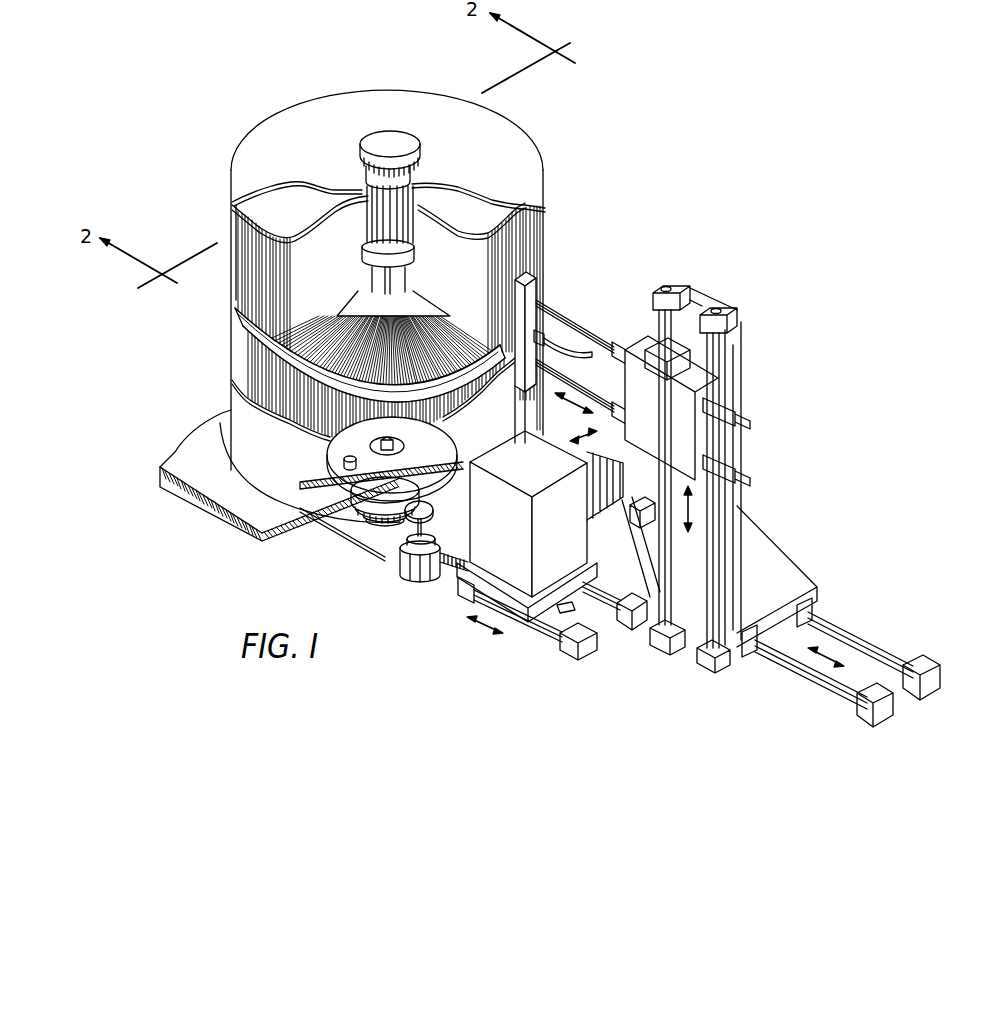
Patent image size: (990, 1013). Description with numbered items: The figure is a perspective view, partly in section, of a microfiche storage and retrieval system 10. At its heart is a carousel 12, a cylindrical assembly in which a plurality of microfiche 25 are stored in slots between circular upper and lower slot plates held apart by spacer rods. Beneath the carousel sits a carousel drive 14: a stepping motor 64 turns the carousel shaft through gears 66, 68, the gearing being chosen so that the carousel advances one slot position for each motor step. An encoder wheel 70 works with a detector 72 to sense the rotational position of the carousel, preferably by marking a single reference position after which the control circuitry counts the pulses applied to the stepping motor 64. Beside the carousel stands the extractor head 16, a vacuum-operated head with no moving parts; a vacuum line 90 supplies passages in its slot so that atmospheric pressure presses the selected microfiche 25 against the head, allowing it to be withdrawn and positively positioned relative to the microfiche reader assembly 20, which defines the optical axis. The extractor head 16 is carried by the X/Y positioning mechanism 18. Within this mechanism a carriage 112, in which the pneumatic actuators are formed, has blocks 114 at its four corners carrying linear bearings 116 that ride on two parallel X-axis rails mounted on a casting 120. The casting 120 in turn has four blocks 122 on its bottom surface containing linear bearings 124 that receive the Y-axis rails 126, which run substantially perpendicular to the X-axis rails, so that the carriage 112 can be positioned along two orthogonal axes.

The apparatus 10 is at (803, 160).
The carousel 12 is at (522, 165).
The carousel drive 14 is at (386, 594).
The extractor head 16 is at (548, 290).
The X/Y positioning mechanism 18 is at (782, 413).
The microfiche reader assembly 20 is at (515, 560).
The microfiche 25 is at (244, 303).
The stepping motor 64 is at (412, 571).
The gear 66 is at (397, 520).
The gear 68 is at (370, 495).
The encoder wheel 70 is at (360, 487).
The detector 72 is at (465, 502).
The vacuum line 90 is at (572, 348).
The carriage 112 is at (638, 376).
The blocks 114 is at (731, 384).
The linear bearings 116 is at (730, 371).
The casting 120 is at (777, 560).
The blocks 122 is at (820, 610).
The linear bearings 124 is at (810, 607).
The rails 126 is at (847, 693).